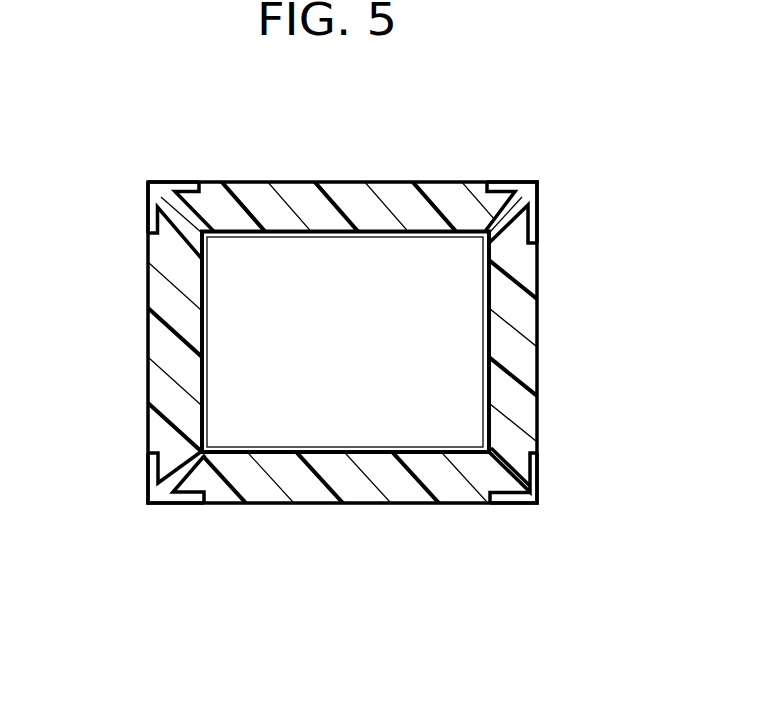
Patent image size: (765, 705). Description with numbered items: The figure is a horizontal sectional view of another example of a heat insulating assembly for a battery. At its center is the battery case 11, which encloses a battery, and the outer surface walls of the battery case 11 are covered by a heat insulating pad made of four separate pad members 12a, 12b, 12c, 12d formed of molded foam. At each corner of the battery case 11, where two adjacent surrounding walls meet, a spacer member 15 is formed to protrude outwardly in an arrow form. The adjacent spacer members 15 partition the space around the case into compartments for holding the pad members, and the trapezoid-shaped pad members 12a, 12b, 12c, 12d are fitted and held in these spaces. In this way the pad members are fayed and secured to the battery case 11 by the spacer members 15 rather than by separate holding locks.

The battery case 11 is at (348, 290).
The pad member 12a is at (153, 345).
The pad member 12b is at (262, 193).
The pad member 12c is at (525, 327).
The pad member 12d is at (368, 488).
The spacer member 15 is at (168, 181).